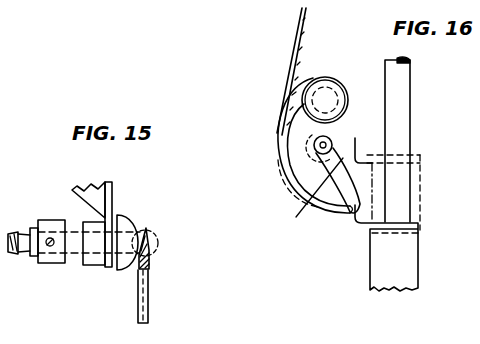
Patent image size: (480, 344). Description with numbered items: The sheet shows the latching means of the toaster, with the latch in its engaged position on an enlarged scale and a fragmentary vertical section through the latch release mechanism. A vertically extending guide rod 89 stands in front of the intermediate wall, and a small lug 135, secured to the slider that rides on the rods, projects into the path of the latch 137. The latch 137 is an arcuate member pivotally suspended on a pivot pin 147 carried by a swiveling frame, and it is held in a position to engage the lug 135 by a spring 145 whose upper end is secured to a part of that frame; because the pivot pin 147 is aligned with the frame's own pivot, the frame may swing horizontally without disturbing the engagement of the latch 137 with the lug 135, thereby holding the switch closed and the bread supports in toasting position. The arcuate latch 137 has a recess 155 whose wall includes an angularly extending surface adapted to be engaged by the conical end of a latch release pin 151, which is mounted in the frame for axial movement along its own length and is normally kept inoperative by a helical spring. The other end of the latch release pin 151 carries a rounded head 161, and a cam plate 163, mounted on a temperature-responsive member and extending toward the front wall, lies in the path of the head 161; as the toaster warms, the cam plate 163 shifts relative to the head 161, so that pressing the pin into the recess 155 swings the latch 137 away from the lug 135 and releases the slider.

In FIG. 15, the rounded head 161 is at (134, 216).
In FIG. 15, the cam plate 163 is at (148, 256).
In FIG. 16, the spring 145 is at (292, 62).
In FIG. 16, the pivot pin 147 is at (328, 98).
In FIG. 16, the latch 137 is at (295, 182).
In FIG. 16, the recess 155 is at (312, 200).
In FIG. 16, the latch release pin 151 is at (335, 136).
In FIG. 16, the guide rods 89 is at (410, 95).
In FIG. 16, the lug 135 is at (355, 232).